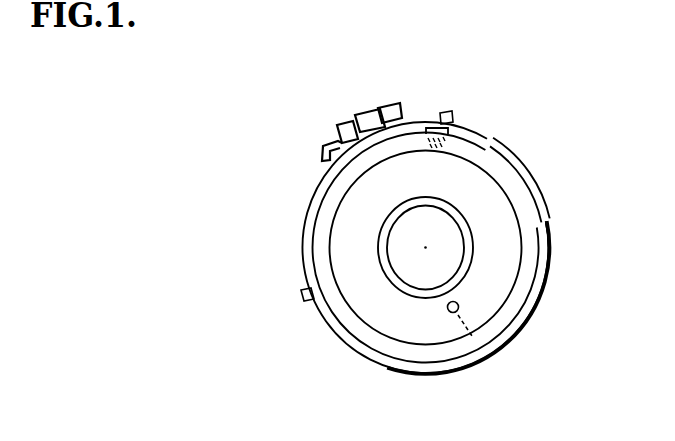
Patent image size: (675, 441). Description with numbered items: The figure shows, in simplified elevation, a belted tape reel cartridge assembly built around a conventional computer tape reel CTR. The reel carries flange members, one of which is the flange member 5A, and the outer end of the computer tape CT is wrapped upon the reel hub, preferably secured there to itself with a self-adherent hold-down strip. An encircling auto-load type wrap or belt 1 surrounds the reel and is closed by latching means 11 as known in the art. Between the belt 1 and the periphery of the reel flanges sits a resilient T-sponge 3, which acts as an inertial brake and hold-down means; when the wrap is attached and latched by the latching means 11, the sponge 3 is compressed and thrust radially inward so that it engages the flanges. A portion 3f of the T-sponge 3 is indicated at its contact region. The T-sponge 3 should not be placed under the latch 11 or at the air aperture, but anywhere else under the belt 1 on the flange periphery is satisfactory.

The belt 1 is at (288, 239).
The T-sponge 3 is at (462, 138).
The notch in ring 3f is at (427, 114).
The flange member 5A is at (512, 183).
The latching means 11 is at (333, 108).
The computer tape CT is at (533, 222).
The computer tape reel CTR is at (513, 259).